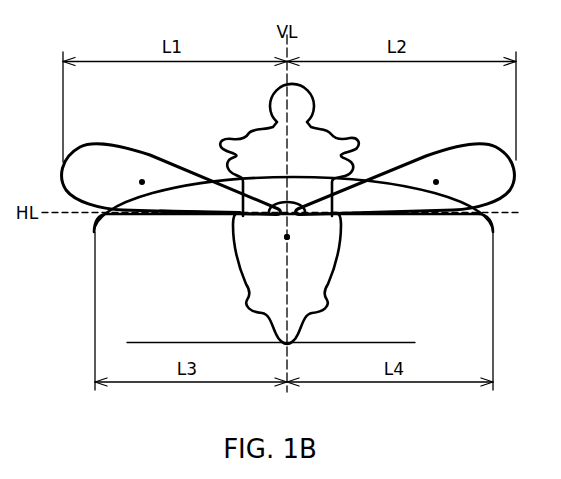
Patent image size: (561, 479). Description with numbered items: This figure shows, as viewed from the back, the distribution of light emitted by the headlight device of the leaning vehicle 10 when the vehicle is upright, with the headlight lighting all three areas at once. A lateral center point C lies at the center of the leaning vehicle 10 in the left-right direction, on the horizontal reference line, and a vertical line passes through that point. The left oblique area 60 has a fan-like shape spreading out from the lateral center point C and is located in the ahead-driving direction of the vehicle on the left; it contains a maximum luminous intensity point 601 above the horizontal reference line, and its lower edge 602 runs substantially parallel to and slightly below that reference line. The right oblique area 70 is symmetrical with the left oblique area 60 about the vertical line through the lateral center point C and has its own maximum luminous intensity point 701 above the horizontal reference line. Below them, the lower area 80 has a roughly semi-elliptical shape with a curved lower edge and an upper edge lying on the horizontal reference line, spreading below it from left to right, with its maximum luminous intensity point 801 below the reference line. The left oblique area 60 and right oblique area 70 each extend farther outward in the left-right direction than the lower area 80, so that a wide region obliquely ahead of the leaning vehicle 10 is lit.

The leaning vehicle 10 is at (342, 303).
The left oblique area 60 is at (148, 153).
The maximum luminous intensity point 601 is at (142, 182).
The lower edge 602 is at (202, 212).
The right oblique area 70 is at (436, 157).
The maximum luminous intensity point 701 is at (436, 182).
The lower area 80 is at (168, 276).
The maximum luminous intensity point 801 is at (287, 237).
The lateral center point C is at (287, 237).